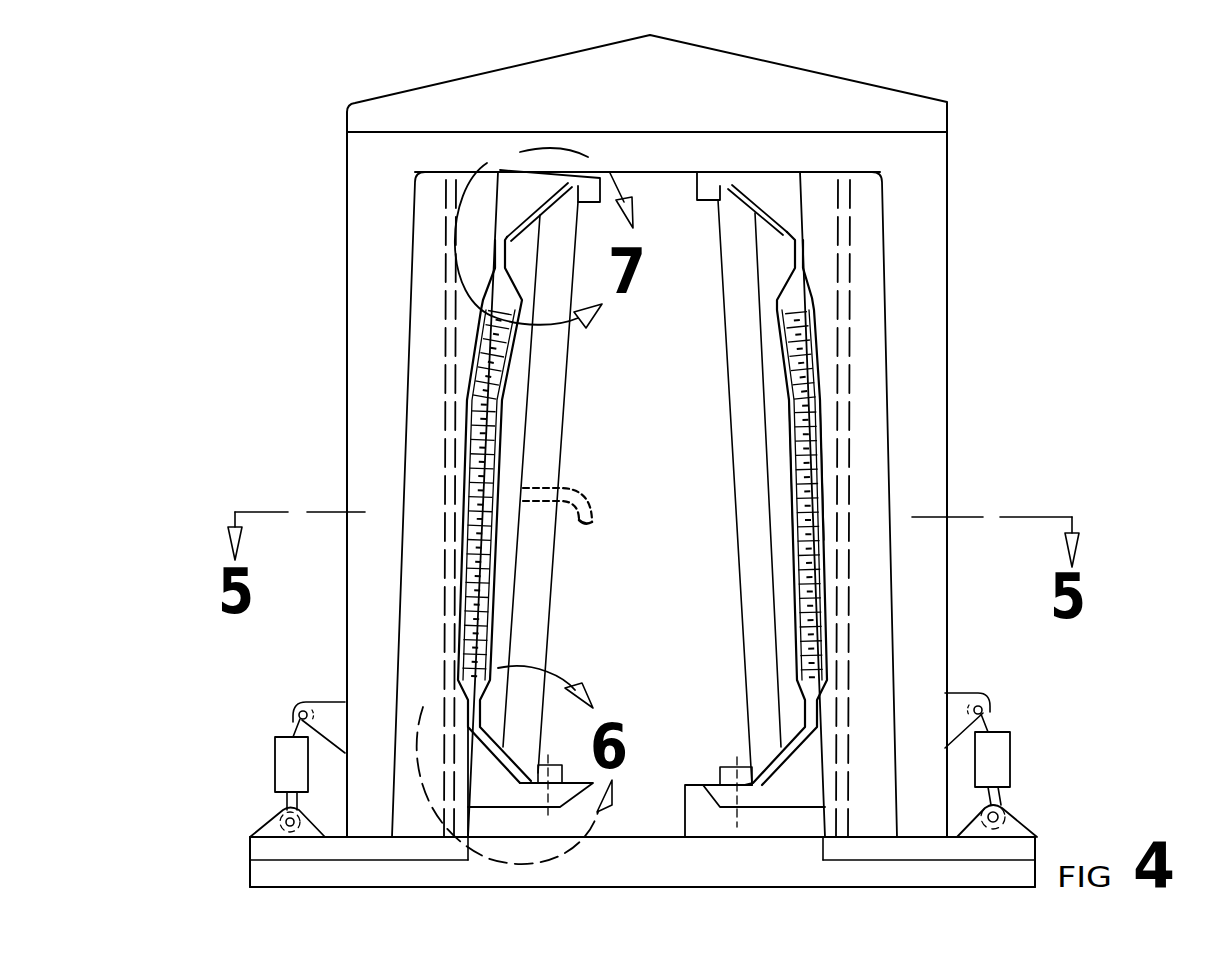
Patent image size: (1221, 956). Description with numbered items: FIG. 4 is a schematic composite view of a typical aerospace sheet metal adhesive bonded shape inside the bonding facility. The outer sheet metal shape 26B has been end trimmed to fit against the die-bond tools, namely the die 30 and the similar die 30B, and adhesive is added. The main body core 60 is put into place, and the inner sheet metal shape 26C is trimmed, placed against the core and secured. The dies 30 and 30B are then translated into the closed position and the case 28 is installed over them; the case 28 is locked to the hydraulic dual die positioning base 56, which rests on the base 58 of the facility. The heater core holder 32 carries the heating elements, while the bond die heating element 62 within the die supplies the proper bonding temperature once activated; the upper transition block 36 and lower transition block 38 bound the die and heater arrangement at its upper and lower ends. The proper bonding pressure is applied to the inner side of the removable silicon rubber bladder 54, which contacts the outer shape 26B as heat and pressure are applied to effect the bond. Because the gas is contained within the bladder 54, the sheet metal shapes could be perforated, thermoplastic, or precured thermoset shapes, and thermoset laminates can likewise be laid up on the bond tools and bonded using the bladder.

The case 28 is at (592, 436).
The die 30 is at (902, 504).
The die similar to 30 30B is at (385, 504).
The bond die heating element 62 is at (920, 508).
The core—main body 60 is at (875, 508).
The formed shape of inner skin from 26 26C is at (732, 458).
The formed shape of outer skin from 26 26B is at (744, 470).
The upper transition block 36 is at (728, 215).
The heater core holder 32 is at (730, 478).
The lower transition block 38 is at (755, 784).
The rubber bladder 54 is at (492, 615).
The hydraulic dual die positioning base 56 is at (250, 843).
The base 58 is at (593, 862).